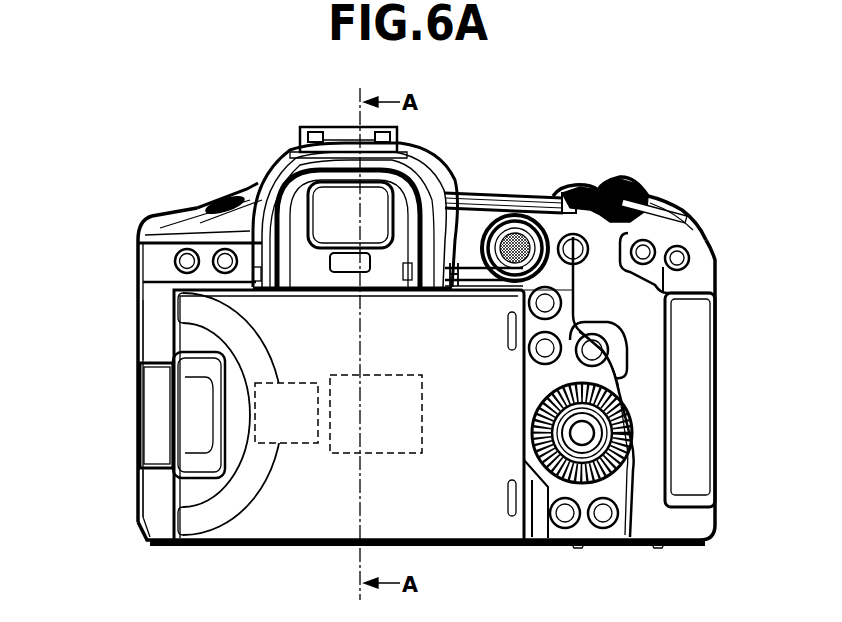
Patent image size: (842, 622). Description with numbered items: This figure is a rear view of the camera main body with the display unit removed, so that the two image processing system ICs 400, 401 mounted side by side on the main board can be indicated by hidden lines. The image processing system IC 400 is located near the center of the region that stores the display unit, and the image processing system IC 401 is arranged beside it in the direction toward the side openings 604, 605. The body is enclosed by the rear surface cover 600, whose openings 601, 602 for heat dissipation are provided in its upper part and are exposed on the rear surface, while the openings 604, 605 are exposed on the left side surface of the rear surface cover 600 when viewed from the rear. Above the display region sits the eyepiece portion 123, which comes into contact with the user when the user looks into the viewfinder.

The eyepiece portion 123 is at (425, 140).
The image processing system IC 400 is at (347, 453).
The image processing system IC 401 is at (293, 443).
The rear surface cover 600 is at (463, 522).
The opening 601 is at (180, 217).
The opening 602 is at (468, 193).
The opening 604 is at (137, 323).
The opening 605 is at (137, 421).